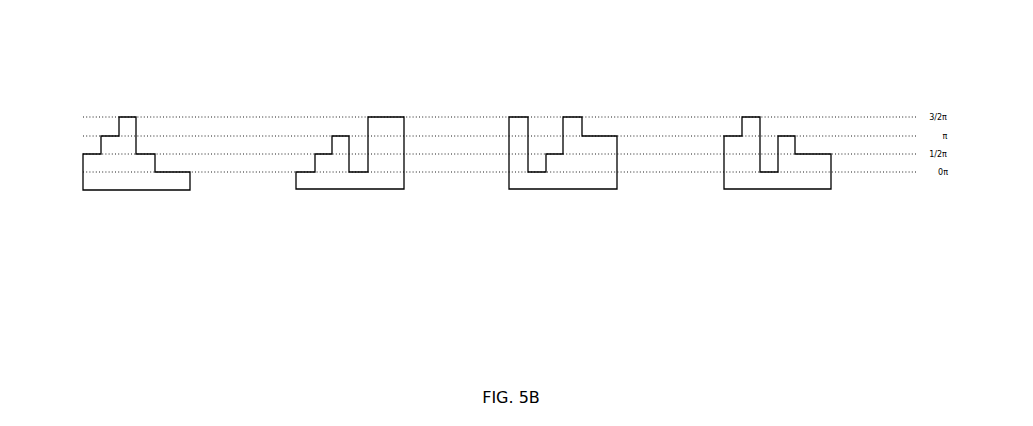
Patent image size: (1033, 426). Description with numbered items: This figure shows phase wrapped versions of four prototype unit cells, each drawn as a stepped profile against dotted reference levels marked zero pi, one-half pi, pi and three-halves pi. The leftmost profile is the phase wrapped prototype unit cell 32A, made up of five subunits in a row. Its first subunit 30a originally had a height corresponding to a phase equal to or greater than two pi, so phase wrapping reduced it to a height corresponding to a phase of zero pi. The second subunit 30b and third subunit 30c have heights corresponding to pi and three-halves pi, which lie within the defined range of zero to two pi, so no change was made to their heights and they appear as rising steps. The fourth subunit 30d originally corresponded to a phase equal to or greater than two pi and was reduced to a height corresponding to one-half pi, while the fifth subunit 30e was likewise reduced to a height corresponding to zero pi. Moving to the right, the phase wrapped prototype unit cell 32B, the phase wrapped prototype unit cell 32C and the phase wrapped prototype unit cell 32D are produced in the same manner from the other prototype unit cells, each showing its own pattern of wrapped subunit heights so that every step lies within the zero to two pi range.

The first subunit 30a is at (88, 143).
The second subunit 30b is at (107, 130).
The third subunit 30c is at (130, 107).
The fourth subunit 30d is at (146, 143).
The fifth subunit 30e is at (175, 162).
The phase wrapped prototype unit cell 32A is at (142, 190).
The phase wrapped prototype unit cell 32B is at (359, 187).
The phase wrapped prototype unit cell 32C is at (563, 187).
The phase wrapped prototype unit cell 32D is at (777, 187).